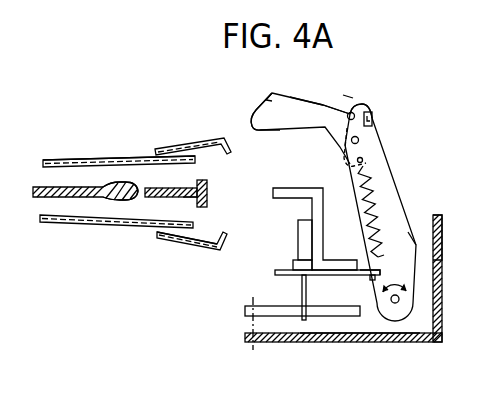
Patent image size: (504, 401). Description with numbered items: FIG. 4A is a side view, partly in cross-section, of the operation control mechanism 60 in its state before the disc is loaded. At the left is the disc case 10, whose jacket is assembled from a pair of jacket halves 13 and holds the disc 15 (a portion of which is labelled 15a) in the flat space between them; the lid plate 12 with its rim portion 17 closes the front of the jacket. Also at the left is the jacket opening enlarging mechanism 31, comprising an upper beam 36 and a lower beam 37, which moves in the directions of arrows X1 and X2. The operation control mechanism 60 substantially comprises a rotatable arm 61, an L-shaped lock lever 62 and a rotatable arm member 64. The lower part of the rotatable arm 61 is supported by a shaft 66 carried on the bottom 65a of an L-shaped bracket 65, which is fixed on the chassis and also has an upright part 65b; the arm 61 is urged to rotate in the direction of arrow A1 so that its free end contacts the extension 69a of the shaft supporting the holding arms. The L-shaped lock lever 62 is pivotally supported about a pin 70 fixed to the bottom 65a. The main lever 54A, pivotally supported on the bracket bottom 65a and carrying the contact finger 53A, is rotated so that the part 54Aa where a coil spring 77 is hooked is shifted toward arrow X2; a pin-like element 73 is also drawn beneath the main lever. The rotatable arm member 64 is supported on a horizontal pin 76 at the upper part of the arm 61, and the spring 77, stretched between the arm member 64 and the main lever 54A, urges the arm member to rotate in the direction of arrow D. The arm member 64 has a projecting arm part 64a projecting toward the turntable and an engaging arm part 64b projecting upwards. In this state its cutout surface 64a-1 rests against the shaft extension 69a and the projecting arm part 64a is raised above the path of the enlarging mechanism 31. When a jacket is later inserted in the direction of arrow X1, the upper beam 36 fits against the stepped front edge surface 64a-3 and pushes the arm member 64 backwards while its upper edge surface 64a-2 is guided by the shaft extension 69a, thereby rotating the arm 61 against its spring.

The disc case 10 is at (51, 157).
The jacket halves 13 is at (103, 160).
The disc 15 is at (58, 197).
The bulged portion of holder 15a is at (125, 183).
The rim portion 17 is at (220, 180).
The lid plate 12 is at (183, 197).
The upper beam 36 is at (185, 147).
The lower beam 37 is at (207, 248).
The jacket opening enlarging mechanism 31 is at (172, 242).
The rotatable arm member 64 is at (323, 127).
The projecting arm part 64a is at (257, 118).
The cutout surface 64a-1 is at (333, 108).
The upper edge surface 64a-2 is at (305, 99).
The front edge surface 64a-3 is at (268, 103).
The engaging arm part 64b is at (373, 115).
The arrow D is at (346, 92).
The shaft extension 69a is at (353, 111).
The rotatable arm 61 is at (410, 212).
The horizontal pin 76 is at (359, 140).
The coil spring 77 is at (370, 185).
The shaft 66 is at (395, 303).
The arrow A1 is at (395, 278).
The L-shaped bracket 65 is at (445, 300).
The bottom of L-shaped bracket 65a is at (340, 342).
The upright part of L-shaped bracket 65b is at (443, 243).
The L-shaped lock lever 62 is at (318, 317).
The pin 70 is at (252, 318).
The pin 73 is at (301, 288).
The main lever 54A is at (277, 270).
The spring hooking part 54Aa is at (383, 273).
The contact finger 53A is at (281, 181).
The operation control mechanism 60 is at (408, 72).
The arrow X1 is at (210, 358).
The arrow X2 is at (170, 380).